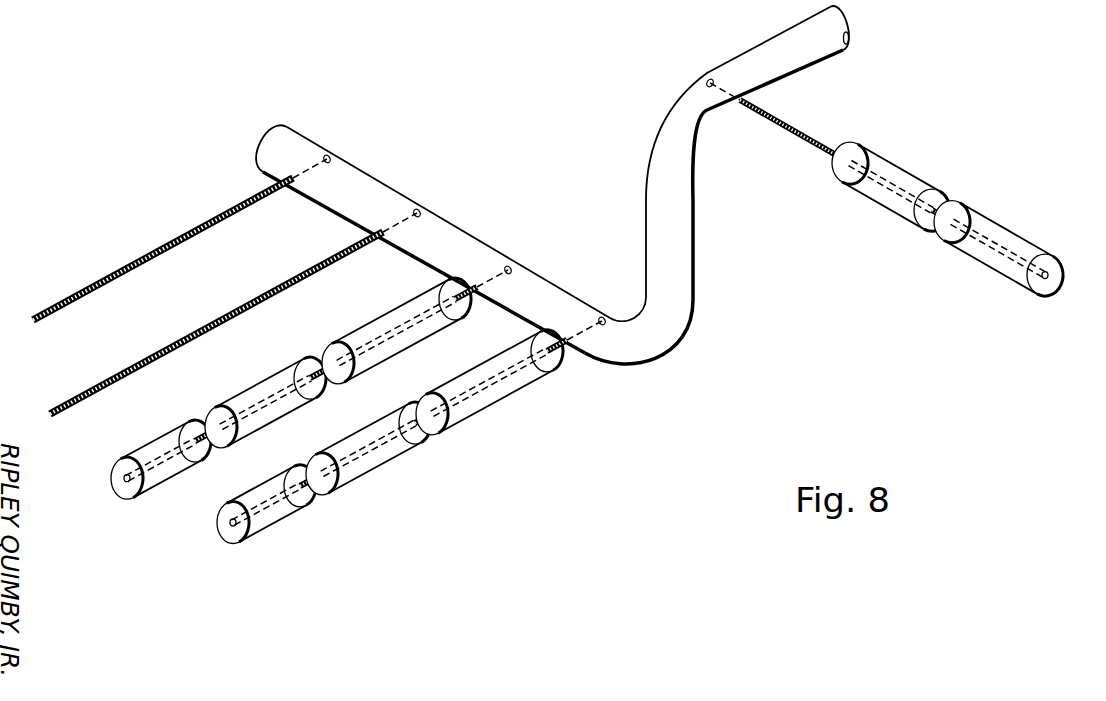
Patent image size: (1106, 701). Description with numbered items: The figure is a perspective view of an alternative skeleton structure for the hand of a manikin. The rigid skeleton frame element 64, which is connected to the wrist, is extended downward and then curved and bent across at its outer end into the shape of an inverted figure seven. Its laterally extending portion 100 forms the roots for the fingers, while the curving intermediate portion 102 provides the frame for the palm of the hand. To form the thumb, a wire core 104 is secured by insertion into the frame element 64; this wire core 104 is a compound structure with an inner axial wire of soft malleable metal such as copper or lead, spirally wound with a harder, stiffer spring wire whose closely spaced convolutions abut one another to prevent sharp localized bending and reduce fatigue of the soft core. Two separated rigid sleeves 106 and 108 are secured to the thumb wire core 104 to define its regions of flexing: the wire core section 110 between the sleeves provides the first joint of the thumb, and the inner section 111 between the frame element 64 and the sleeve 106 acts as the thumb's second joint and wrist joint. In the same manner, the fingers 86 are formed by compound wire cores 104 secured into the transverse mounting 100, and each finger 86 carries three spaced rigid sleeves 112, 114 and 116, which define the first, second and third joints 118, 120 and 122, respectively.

The skeleton frame element 64 is at (817, 60).
The finger 86 is at (373, 490).
The laterally extending portion 100 is at (357, 170).
The curving intermediate portion 102 is at (693, 235).
The wire core 104 is at (176, 243).
The rigid sleeve 106 is at (898, 168).
The rigid sleeve 108 is at (1017, 238).
The wire core section 110 is at (950, 212).
The inner section 111 is at (793, 127).
The rigid sleeve 112 is at (272, 522).
The rigid sleeve 114 is at (373, 467).
The rigid sleeve 116 is at (477, 407).
The first joint 118 is at (318, 488).
The second joint 120 is at (425, 430).
The third joint 122 is at (555, 352).